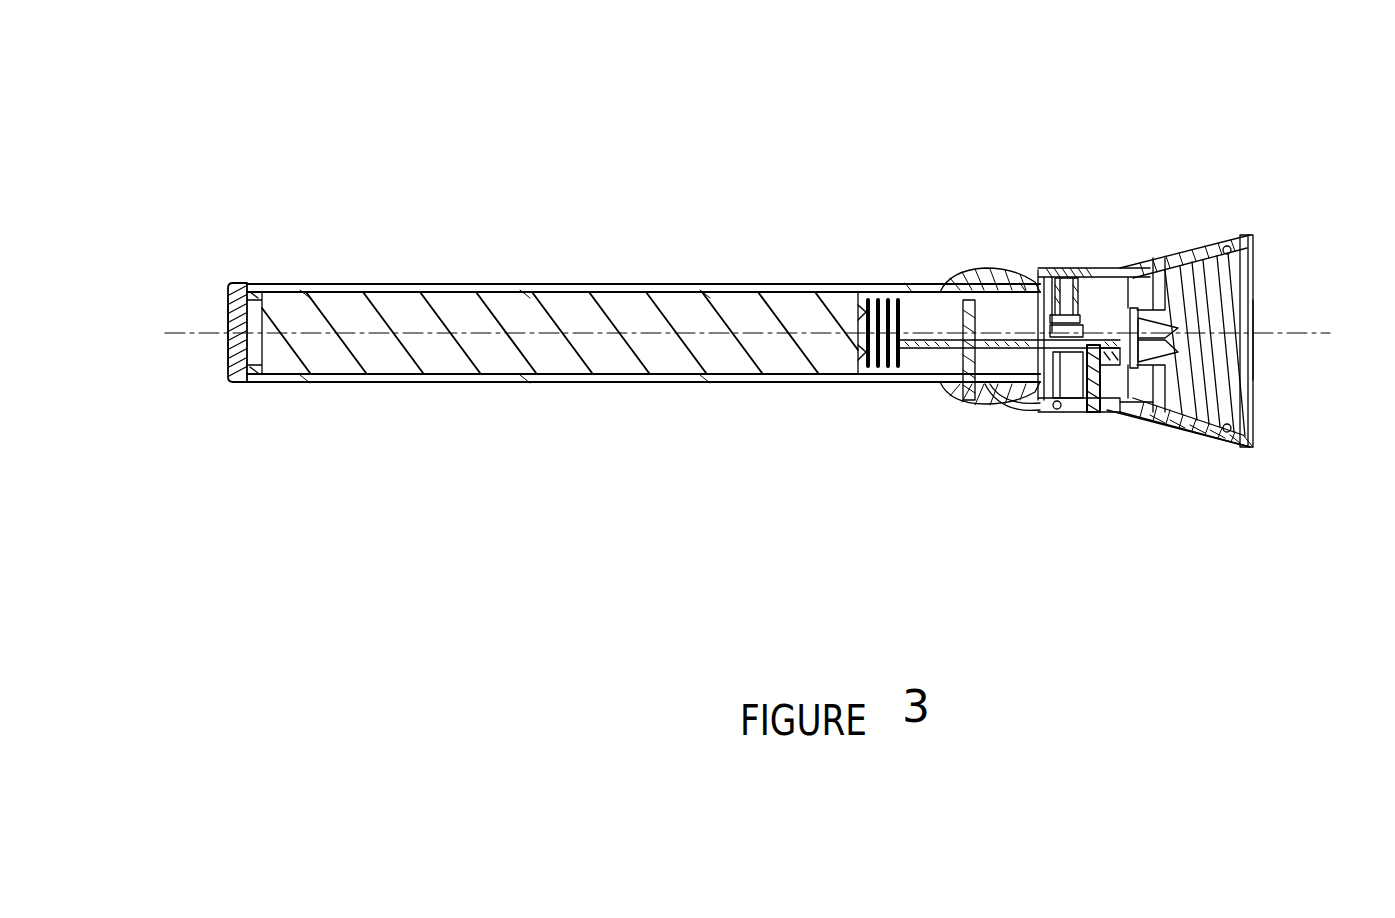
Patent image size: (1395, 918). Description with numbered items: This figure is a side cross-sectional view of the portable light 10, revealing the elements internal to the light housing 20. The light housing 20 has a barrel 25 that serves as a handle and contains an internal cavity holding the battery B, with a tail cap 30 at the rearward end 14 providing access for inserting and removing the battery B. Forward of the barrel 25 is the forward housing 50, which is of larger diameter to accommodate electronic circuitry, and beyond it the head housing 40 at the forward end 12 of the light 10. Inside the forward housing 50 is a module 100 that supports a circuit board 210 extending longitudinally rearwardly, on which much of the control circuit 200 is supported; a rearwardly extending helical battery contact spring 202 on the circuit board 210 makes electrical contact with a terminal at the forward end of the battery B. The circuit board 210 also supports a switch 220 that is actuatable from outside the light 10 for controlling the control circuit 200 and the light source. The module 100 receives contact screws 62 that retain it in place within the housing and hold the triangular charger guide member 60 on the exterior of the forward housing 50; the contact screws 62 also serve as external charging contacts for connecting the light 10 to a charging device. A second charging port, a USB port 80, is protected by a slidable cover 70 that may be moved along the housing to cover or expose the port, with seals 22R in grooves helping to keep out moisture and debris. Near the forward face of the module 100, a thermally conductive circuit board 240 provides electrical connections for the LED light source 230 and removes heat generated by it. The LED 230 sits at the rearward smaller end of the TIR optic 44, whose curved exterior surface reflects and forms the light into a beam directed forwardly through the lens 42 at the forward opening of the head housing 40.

The portable light 10 is at (710, 92).
The forward end 12 is at (1275, 381).
The rearward end 14 is at (200, 358).
The light housing 20 is at (768, 282).
The seal 22R is at (908, 290).
The barrel 25 is at (538, 384).
The tail cap 30 is at (247, 385).
The head housing 40 is at (1228, 232).
The forward lens 42 is at (1252, 425).
The TIR optic 44 is at (1213, 288).
The forward housing 50 is at (1020, 400).
The charger guide member 60 is at (1075, 415).
The contact screws 62 is at (1055, 415).
The slidable cover 70 is at (980, 288).
The USB port 80 is at (940, 378).
The module 100 is at (1105, 312).
The control circuit 200 is at (1005, 348).
The battery contact spring 202 is at (880, 382).
The circuit board 210 is at (1011, 326).
The switch 220 is at (1066, 268).
The LED light source 230 is at (1185, 335).
The circuit board 240 is at (1145, 262).
The battery B is at (655, 354).